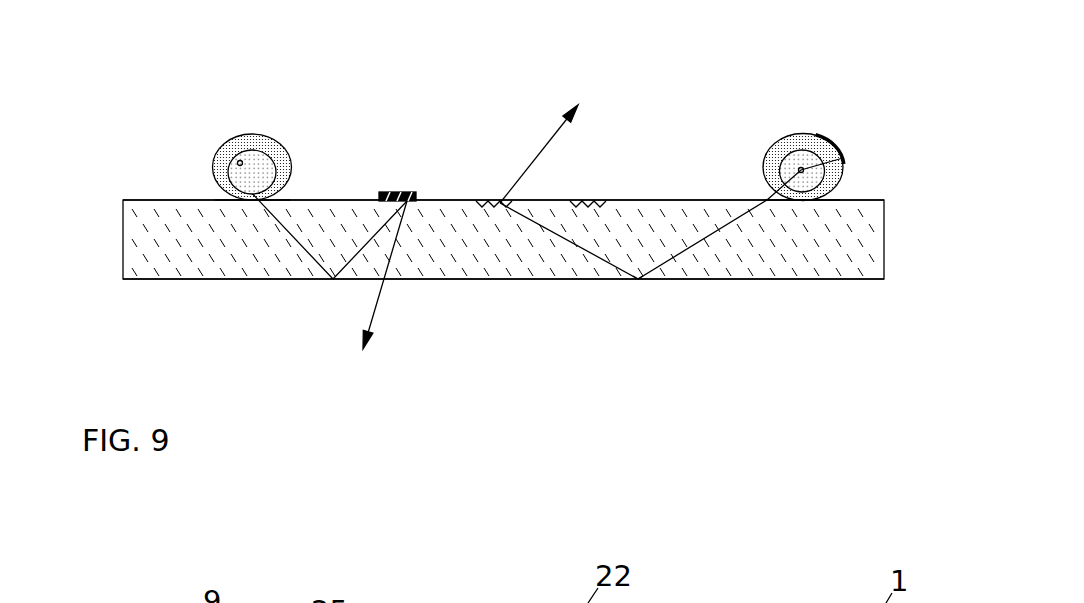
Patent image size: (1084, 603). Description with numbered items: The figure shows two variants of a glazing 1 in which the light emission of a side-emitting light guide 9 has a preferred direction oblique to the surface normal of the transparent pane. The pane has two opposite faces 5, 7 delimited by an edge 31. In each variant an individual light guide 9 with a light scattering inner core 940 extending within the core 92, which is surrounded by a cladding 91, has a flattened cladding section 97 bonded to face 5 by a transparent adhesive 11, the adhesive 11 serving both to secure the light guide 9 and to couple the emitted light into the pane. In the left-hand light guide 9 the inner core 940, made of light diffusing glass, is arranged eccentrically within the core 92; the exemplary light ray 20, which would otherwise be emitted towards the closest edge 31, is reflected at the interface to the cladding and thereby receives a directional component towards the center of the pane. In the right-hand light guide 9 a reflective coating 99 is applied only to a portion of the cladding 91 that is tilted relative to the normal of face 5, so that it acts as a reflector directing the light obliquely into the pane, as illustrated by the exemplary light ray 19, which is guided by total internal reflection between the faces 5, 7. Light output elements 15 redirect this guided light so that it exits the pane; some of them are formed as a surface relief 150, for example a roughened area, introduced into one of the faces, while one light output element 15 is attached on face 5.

The glazing 1 is at (650, 85).
The face 5 is at (457, 200).
The face 7 is at (638, 280).
The light guide 9 is at (539, 112).
The transparent adhesive 11 is at (212, 200).
The light output elements 15 is at (397, 200).
The light ray 19 is at (678, 253).
The light ray 20 is at (377, 305).
The edge 31 is at (123, 240).
The cladding 91 is at (245, 133).
The core 92 is at (272, 150).
The flattened cladding section 97 is at (250, 203).
The reflective coating 99 is at (843, 145).
The surface relief 150 is at (482, 202).
The inner core 940 is at (218, 155).